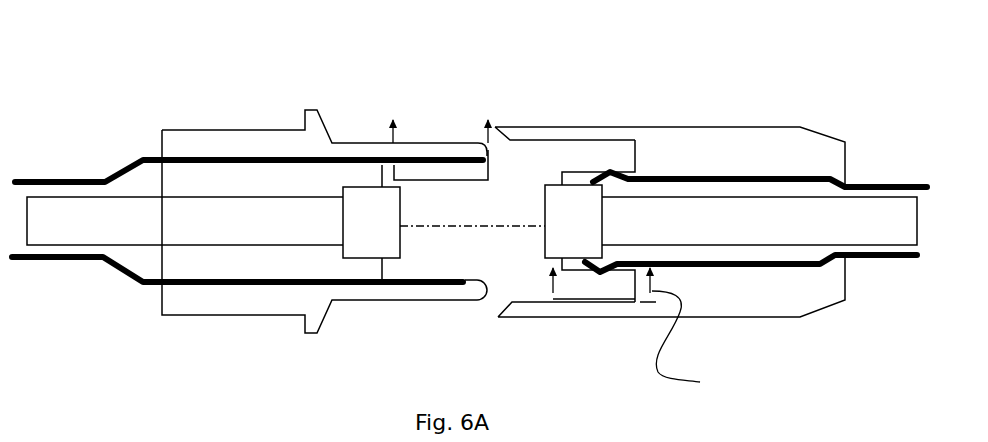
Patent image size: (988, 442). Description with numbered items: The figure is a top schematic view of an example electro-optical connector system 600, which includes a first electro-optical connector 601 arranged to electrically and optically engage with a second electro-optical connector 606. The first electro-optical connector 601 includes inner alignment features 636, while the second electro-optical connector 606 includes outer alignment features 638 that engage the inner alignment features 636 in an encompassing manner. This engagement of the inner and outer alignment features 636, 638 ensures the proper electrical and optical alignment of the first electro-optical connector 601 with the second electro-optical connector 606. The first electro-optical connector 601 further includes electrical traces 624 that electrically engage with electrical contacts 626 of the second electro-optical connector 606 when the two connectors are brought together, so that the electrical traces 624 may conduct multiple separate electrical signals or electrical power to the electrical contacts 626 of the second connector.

The electro-optical connector system 600 is at (469, 242).
The first electro-optical connector 601 is at (258, 124).
The inner alignment features 636 is at (362, 156).
The electrical traces 624 is at (443, 144).
The outer alignment features 638 is at (565, 140).
The electrical contacts 626 is at (667, 167).
The second electro-optical connector 606 is at (727, 120).